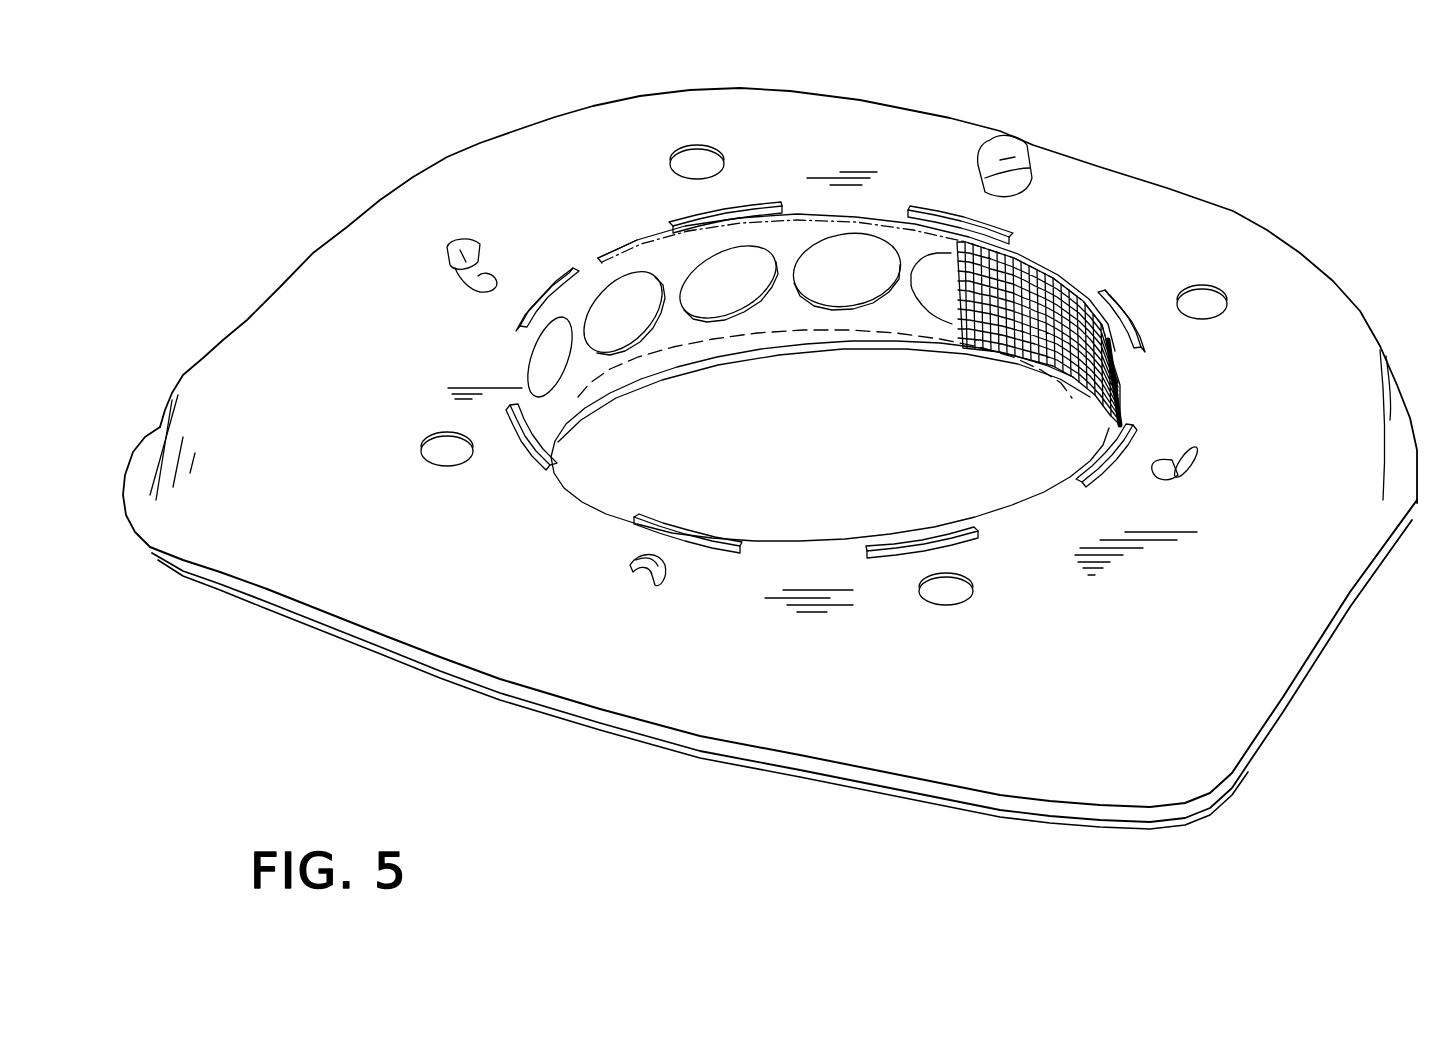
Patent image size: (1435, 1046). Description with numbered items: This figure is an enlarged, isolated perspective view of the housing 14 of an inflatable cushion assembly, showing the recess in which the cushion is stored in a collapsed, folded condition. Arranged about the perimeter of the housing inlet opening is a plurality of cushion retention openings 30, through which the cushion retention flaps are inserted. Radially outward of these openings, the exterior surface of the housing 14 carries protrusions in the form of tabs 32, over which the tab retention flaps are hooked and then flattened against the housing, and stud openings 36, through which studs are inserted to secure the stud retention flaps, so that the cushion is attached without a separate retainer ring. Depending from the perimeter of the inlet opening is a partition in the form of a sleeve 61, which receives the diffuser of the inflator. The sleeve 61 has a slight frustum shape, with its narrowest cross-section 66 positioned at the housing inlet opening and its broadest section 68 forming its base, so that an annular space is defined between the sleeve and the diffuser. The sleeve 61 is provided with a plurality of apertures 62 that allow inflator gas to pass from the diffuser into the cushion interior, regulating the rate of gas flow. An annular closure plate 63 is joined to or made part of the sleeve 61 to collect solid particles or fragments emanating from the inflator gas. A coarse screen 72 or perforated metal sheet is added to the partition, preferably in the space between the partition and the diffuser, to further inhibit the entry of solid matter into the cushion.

The housing 14 is at (620, 97).
The cushion retention openings 30 is at (781, 202).
The tabs 32 is at (1012, 147).
The stud openings 36 is at (700, 165).
The sleeve 61 is at (665, 258).
The apertures 62 is at (860, 258).
The annular closure plate 63 is at (773, 340).
The narrowest cross-section 66 is at (596, 262).
The broadest section 68 is at (527, 378).
The coarse screen 72 is at (1065, 300).